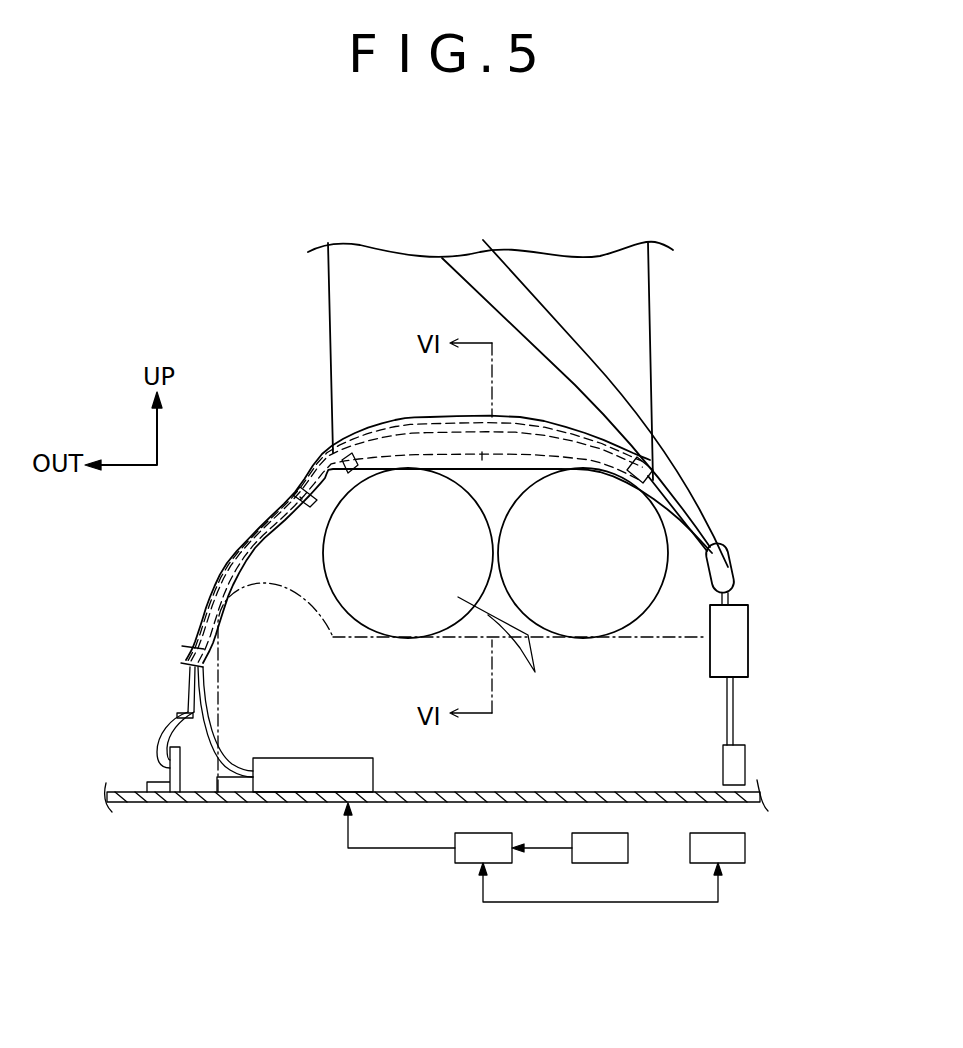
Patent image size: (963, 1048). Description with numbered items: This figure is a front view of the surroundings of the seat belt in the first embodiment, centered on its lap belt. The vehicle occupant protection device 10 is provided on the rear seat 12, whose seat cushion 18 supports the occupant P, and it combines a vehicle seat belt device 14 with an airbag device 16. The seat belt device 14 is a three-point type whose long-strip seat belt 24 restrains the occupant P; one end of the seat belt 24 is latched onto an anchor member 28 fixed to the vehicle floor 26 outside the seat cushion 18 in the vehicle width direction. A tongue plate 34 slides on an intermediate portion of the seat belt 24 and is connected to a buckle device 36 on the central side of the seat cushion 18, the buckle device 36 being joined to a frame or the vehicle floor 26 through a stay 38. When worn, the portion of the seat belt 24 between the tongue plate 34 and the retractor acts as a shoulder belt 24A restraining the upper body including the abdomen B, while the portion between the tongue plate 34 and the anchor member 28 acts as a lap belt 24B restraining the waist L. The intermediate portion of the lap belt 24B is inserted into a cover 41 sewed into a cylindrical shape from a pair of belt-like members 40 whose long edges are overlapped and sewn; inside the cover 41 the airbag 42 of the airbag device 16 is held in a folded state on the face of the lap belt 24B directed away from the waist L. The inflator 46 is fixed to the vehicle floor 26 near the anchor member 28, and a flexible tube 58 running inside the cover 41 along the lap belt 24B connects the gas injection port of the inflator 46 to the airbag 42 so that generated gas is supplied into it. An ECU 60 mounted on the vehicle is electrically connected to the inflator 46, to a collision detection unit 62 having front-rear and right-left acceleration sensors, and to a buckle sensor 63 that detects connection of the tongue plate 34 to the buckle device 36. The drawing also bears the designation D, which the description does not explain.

The vehicle occupant protection device 10 is at (782, 333).
The rear seat 12 is at (205, 722).
The vehicle seat belt device 14 is at (728, 450).
The airbag device 16 is at (385, 417).
The seat cushion 18 is at (156, 690).
The seat belt 24 is at (585, 403).
The shoulder belt 24A is at (535, 293).
The lap belt 24B is at (355, 434).
The vehicle floor 26 is at (600, 790).
The anchor member 28 is at (165, 765).
The tongue plate 34 is at (736, 578).
The buckle device 36 is at (748, 648).
The stay 38 is at (735, 716).
The belt-like members 40 is at (450, 442).
The cover 41 is at (320, 455).
The airbag 42 is at (480, 470).
The inflator 46 is at (310, 758).
The flexible tube 58 is at (265, 521).
The ECU 60 is at (455, 855).
The collision detection unit 62 is at (628, 848).
The buckle sensor 63 is at (748, 848).
The occupant P is at (325, 297).
The abdomen B is at (633, 357).
The waist L is at (300, 497).
The door trim region D is at (503, 652).